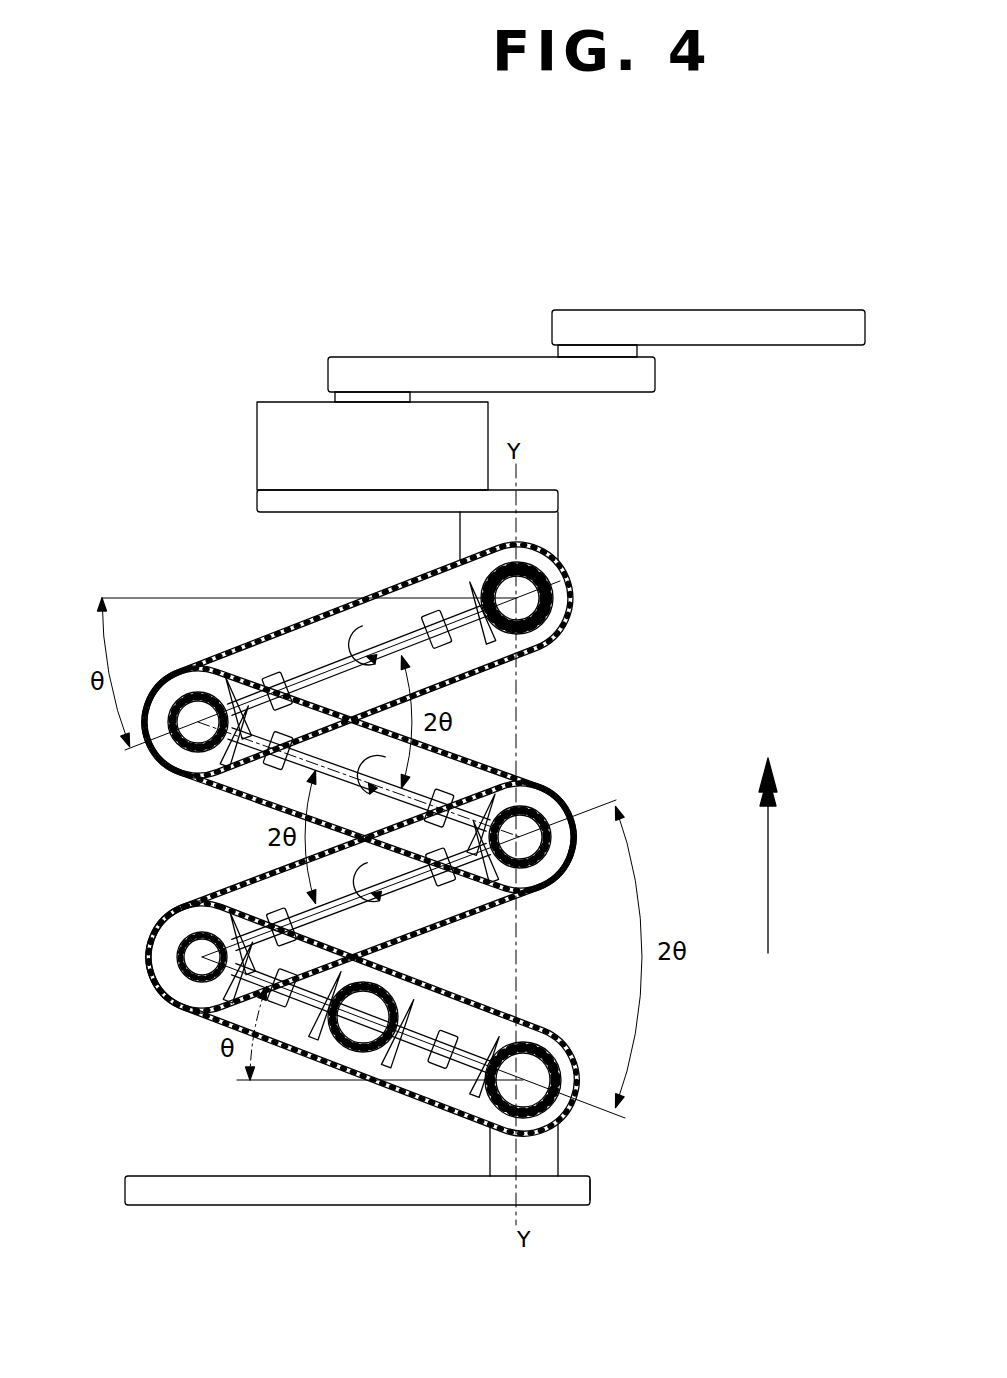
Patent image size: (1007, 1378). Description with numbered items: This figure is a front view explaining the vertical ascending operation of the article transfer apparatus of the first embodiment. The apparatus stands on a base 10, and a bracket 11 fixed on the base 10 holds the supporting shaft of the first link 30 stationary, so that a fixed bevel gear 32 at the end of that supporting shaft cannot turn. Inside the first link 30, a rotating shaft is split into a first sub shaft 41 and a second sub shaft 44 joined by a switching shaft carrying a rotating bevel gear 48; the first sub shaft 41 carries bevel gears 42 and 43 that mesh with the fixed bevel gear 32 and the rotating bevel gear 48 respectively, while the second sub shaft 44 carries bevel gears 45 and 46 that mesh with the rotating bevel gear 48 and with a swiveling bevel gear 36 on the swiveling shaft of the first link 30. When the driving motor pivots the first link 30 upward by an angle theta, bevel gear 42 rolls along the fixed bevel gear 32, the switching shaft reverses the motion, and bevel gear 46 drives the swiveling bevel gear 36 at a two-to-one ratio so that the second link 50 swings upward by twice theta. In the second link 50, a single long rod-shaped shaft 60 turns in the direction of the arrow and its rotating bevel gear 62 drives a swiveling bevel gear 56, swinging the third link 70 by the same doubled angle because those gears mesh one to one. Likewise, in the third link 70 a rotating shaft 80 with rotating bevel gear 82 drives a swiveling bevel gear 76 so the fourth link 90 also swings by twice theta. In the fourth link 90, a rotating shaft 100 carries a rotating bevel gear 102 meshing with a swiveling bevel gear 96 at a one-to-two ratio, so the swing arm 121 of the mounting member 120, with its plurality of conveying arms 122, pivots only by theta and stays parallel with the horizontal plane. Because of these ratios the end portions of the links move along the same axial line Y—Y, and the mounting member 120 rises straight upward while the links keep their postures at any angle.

The base 10 is at (127, 1188).
The bracket 11 is at (590, 1196).
The first link 30 is at (557, 1027).
The fixed bevel gear 32 is at (570, 1120).
The swiveling bevel gear 36 is at (146, 957).
The first sub shaft 41 is at (430, 1013).
The bevel gear 42 is at (503, 1033).
The bevel gear 43 is at (400, 1007).
The second sub shaft 44 is at (223, 1000).
The bevel gear 45 is at (327, 1043).
The bevel gear 46 is at (183, 1003).
The rotating bevel gear 48 is at (343, 1057).
The second link 50 is at (562, 879).
The swiveling bevel gear 56 is at (547, 810).
The shaft 60 is at (430, 890).
The rotating bevel gear 62 is at (535, 793).
The third link 70 is at (147, 746).
The swiveling bevel gear 76 is at (188, 751).
The rotating shaft 80 is at (297, 777).
The rotating bevel gear 82 is at (221, 754).
The fourth link 90 is at (574, 594).
The swiveling bevel gear 96 is at (556, 629).
The rotating shaft 100 is at (313, 663).
The rotating bevel gear 102 is at (493, 630).
The mounting member 120 is at (720, 450).
The swing arm 121 is at (275, 500).
The conveying arms 122 is at (490, 368).